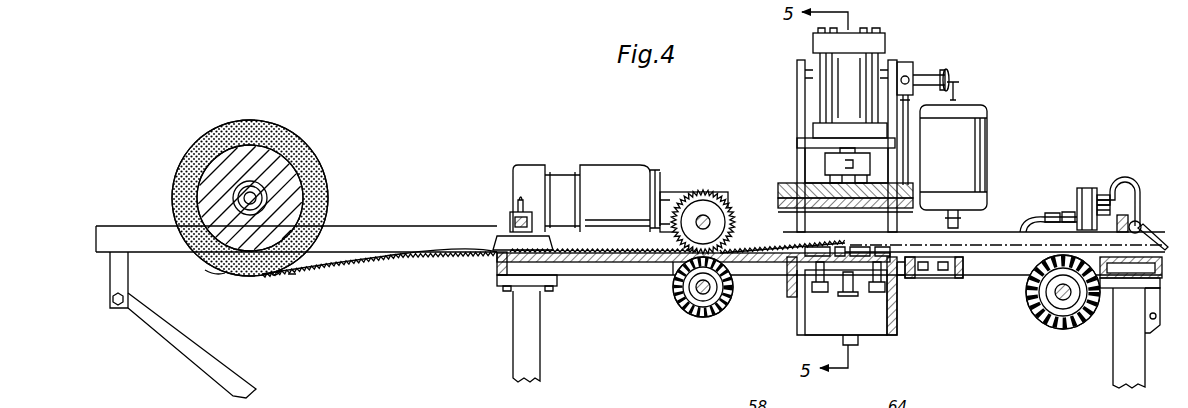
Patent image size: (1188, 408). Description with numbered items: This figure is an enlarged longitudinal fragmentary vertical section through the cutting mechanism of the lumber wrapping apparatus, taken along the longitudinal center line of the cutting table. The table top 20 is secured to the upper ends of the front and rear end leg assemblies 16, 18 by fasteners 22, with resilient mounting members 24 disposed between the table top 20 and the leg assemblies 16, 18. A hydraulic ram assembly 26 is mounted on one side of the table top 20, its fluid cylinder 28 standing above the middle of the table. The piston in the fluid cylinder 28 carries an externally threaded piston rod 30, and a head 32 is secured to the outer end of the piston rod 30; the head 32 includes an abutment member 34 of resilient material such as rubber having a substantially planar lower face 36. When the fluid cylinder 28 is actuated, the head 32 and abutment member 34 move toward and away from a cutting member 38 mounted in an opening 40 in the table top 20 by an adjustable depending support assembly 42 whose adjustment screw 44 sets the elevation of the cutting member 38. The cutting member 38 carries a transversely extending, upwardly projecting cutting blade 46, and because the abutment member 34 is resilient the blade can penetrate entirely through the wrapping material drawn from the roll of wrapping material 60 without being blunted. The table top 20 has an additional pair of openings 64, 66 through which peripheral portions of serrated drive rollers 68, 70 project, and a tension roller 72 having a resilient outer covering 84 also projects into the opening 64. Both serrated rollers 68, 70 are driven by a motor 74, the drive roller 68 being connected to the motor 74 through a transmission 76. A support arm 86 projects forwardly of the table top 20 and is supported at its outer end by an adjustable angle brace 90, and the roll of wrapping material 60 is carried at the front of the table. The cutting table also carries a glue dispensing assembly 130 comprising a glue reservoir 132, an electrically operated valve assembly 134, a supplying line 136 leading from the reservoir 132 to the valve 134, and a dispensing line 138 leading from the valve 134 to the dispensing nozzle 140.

The front end leg assembly 16 is at (542, 346).
The rear end leg assembly 18 is at (1138, 350).
The table top 20 is at (637, 278).
The fasteners 22 is at (506, 292).
The resilient mounting members 24 is at (497, 282).
The hydraulic ram assembly 26 is at (900, 54).
The fluid cylinder 28 is at (825, 95).
The piston rod 30 is at (848, 152).
The head 32 is at (775, 187).
The abutment member 34 is at (778, 203).
The planar lower face 36 is at (794, 213).
The cutting member 38 is at (915, 283).
The opening 40 is at (790, 278).
The adjustable depending support assembly 42 is at (848, 296).
The adjustment screw 44 is at (818, 292).
The cutting blade 46 is at (848, 254).
The roll of wrapping material 60 is at (332, 178).
The opening 64 is at (680, 283).
The opening 66 is at (1029, 278).
The serrated drive roller 68 is at (698, 192).
The serrated drive roller 70 is at (1056, 330).
The tension roller 72 is at (714, 315).
The motor 74 is at (627, 172).
The transmission 76 is at (665, 186).
The resilient outer covering 84 is at (692, 316).
The support arm 86 is at (378, 224).
The adjustable angle brace 90 is at (205, 362).
The glue dispensing assembly 130 is at (1093, 184).
The glue reservoir 132 is at (987, 155).
The electrically operated valve assembly 134 is at (1077, 196).
The supplying line 136 is at (1027, 222).
The dispensing line 138 is at (1140, 200).
The dispensing nozzle 140 is at (1160, 240).